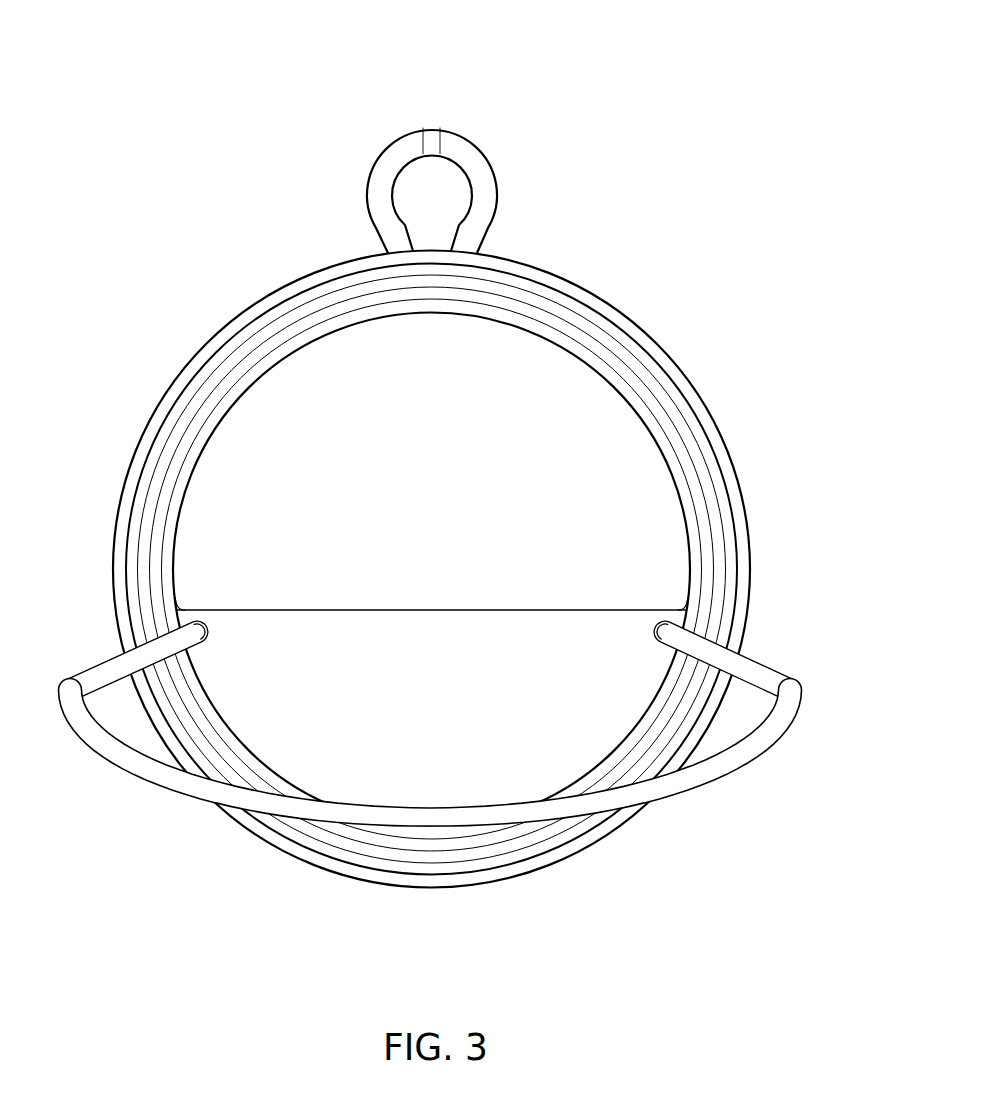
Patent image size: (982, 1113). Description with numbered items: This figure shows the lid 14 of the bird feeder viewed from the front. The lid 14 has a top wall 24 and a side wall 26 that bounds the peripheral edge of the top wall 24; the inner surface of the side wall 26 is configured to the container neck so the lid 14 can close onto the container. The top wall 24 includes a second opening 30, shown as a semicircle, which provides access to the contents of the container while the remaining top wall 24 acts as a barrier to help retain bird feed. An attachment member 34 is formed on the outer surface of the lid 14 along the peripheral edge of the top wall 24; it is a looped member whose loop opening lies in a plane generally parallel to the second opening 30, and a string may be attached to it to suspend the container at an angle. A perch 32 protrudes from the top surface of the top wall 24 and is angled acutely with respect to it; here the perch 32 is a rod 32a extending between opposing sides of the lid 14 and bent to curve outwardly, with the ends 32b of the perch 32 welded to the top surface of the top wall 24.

The lid 14 is at (437, 447).
The top wall 24 is at (418, 721).
The side wall 26 is at (612, 300).
The second opening 30 is at (418, 520).
The perch 32 is at (437, 694).
The rod 32a is at (152, 770).
The ends of the perch 32b is at (200, 606).
The attachment member 34 is at (456, 143).